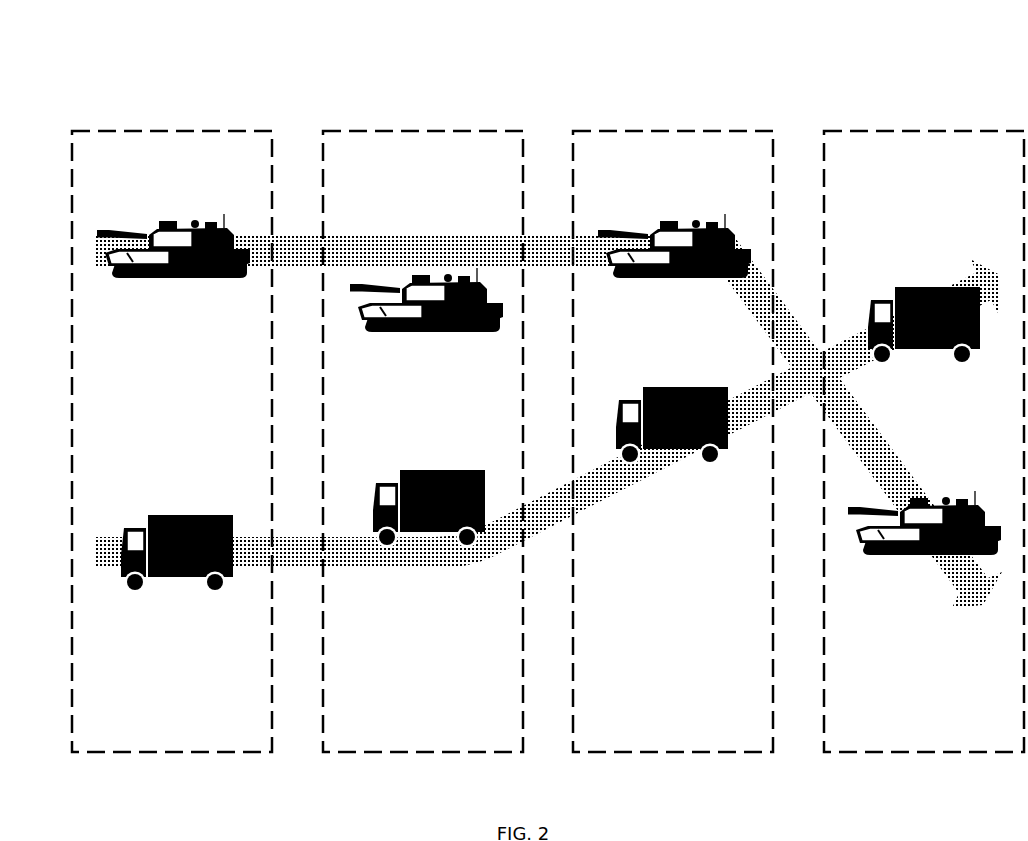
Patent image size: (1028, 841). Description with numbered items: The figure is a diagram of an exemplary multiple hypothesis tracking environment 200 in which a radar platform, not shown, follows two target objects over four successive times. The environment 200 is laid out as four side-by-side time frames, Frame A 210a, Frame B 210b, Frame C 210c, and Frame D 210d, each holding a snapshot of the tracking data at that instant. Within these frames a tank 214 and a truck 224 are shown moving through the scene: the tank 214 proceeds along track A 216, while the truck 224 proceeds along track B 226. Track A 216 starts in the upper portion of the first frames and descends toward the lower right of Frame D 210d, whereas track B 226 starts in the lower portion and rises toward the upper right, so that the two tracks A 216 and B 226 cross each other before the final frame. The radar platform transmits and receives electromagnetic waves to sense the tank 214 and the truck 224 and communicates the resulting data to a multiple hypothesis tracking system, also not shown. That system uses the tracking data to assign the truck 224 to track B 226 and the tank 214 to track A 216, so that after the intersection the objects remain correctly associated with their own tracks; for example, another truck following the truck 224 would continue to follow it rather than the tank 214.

The multiple hypothesis tracking environment 200 is at (548, 380).
The Frame A 210a is at (110, 131).
The Frame B 210b is at (360, 131).
The Frame C 210c is at (610, 131).
The Frame D 210d is at (862, 131).
The tank 214 is at (197, 283).
The track A 216 is at (485, 235).
The truck 224 is at (148, 578).
The track B 226 is at (988, 263).